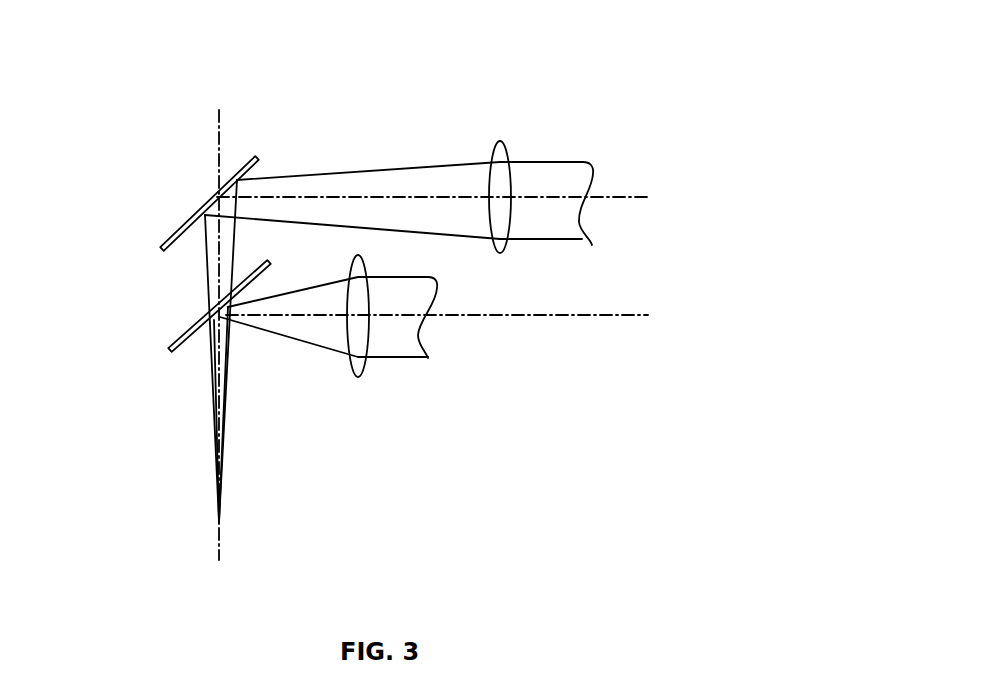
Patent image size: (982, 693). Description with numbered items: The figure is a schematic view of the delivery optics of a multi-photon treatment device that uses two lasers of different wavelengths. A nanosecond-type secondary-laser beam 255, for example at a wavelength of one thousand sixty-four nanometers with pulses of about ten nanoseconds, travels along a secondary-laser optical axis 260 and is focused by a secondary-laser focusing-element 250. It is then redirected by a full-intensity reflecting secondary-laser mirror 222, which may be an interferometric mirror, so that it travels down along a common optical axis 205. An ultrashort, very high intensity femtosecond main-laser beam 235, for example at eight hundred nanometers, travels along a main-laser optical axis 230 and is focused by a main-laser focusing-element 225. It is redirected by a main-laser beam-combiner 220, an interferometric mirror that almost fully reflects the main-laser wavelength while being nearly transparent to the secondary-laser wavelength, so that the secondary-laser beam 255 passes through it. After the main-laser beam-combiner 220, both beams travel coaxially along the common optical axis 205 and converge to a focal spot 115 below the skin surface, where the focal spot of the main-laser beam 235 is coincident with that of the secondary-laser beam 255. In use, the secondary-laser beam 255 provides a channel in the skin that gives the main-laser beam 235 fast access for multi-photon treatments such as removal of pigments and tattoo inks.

The common optical axis 205 is at (219, 115).
The secondary-laser mirror 222 is at (167, 240).
The main-laser beam-combiner 220 is at (170, 345).
The focal spot 115 is at (219, 520).
The secondary-laser focusing-element 250 is at (500, 143).
The secondary-laser beam 255 is at (558, 162).
The secondary-laser optical axis 260 is at (623, 195).
The main-laser optical axis 230 is at (523, 316).
The main-laser beam 235 is at (390, 362).
The main-laser focusing-element 225 is at (358, 377).